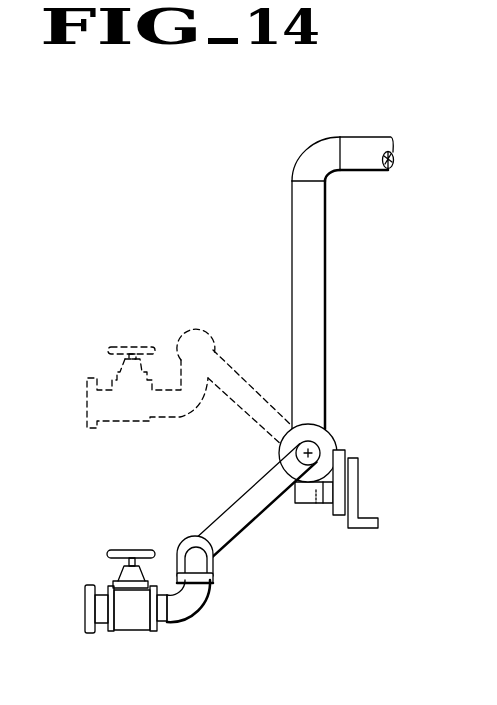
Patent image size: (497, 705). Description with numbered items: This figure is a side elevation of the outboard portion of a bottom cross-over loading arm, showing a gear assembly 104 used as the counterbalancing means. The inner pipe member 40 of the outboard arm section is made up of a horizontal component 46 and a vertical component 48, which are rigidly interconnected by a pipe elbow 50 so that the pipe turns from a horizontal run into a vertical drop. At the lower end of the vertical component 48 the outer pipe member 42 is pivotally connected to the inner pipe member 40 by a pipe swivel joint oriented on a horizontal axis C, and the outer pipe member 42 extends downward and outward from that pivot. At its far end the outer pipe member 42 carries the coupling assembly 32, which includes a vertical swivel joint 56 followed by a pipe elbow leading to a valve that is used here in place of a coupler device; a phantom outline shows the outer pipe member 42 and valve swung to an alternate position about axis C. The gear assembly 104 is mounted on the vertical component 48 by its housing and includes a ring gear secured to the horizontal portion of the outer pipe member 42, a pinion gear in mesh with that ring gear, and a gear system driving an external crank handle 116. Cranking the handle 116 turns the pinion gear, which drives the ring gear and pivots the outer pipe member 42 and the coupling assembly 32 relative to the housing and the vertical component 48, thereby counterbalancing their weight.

The coupling assembly 32 is at (201, 613).
The inner pipe member 40 is at (327, 220).
The outer pipe member 42 is at (243, 526).
The horizontal component 46 is at (356, 136).
The vertical component 48 is at (313, 243).
The pipe elbow 50 is at (300, 155).
The vertical swivel joint 56 is at (215, 578).
The gear assembly 104 is at (336, 431).
The crank handle 116 is at (359, 480).
The horizontal axis C is at (303, 454).